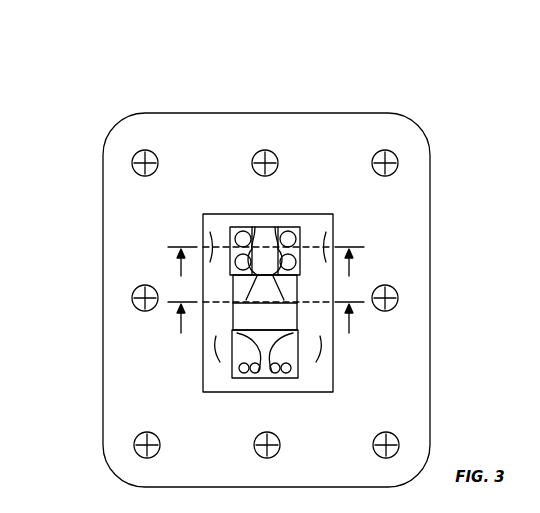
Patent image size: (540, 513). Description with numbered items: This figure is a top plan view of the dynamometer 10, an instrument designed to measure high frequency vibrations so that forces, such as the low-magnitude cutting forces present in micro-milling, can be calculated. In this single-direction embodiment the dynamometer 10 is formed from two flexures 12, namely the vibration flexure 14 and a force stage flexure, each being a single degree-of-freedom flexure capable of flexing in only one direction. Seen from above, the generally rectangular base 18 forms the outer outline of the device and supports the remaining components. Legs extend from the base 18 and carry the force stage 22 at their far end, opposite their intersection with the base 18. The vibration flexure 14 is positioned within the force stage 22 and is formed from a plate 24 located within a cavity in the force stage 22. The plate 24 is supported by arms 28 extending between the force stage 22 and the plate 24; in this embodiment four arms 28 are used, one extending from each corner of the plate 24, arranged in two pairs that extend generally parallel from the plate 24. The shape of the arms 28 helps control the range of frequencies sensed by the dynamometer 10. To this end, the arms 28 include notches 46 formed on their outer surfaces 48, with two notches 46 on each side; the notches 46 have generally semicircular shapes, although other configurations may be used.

The dynamometer 10 is at (304, 95).
The flexures 12 is at (298, 202).
The vibration flexure 14 is at (300, 321).
The base 18 is at (430, 222).
The force stage 22 is at (203, 243).
The plate 24 is at (232, 303).
The arms 28 is at (232, 247).
The notches 46 is at (233, 243).
The outer surfaces 48 is at (262, 250).